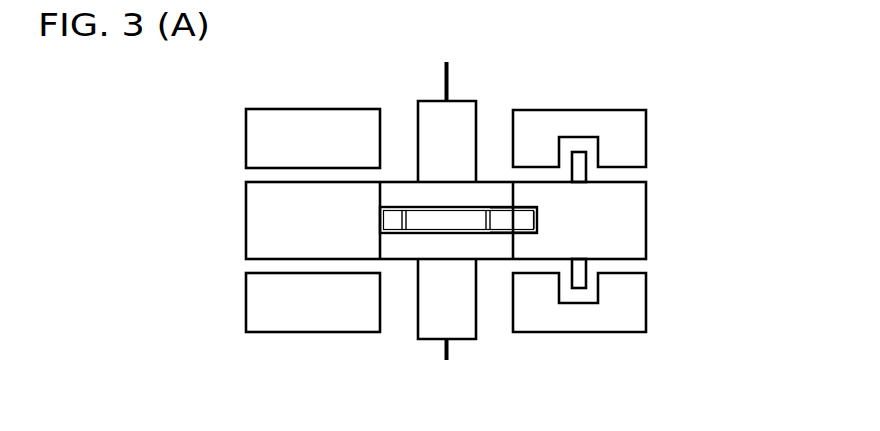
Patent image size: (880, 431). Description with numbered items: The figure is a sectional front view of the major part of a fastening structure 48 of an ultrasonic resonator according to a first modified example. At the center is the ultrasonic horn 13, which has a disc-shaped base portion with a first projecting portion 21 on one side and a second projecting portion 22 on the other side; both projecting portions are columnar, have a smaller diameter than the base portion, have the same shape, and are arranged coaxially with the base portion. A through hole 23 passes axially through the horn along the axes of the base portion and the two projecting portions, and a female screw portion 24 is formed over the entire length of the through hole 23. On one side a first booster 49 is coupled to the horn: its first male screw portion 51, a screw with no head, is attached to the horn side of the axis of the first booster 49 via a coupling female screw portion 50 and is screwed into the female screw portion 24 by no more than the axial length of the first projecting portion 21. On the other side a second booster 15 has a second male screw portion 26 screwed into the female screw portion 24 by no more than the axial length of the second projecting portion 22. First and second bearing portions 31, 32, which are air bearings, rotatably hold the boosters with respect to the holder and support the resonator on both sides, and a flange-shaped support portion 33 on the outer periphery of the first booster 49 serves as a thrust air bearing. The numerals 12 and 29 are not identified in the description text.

The shaft pin 12 is at (446, 62).
The ultrasonic horn 13 is at (470, 85).
The second booster 15 is at (268, 243).
The first projecting portion 21 is at (488, 248).
The second projecting portion 22 is at (388, 248).
The through hole 23 is at (413, 207).
The female screw portion 24 is at (475, 210).
The second male screw portion 26 is at (397, 222).
The lead body 29 is at (415, 222).
The first bearing portion 31 is at (562, 103).
The second bearing portion 32 is at (331, 87).
The flange-shaped support portion 33 is at (582, 160).
The fastening structure 48 is at (685, 55).
The first booster 49 is at (620, 238).
The coupling female screw portion 50 is at (522, 212).
The first male screw portion 51 is at (505, 222).